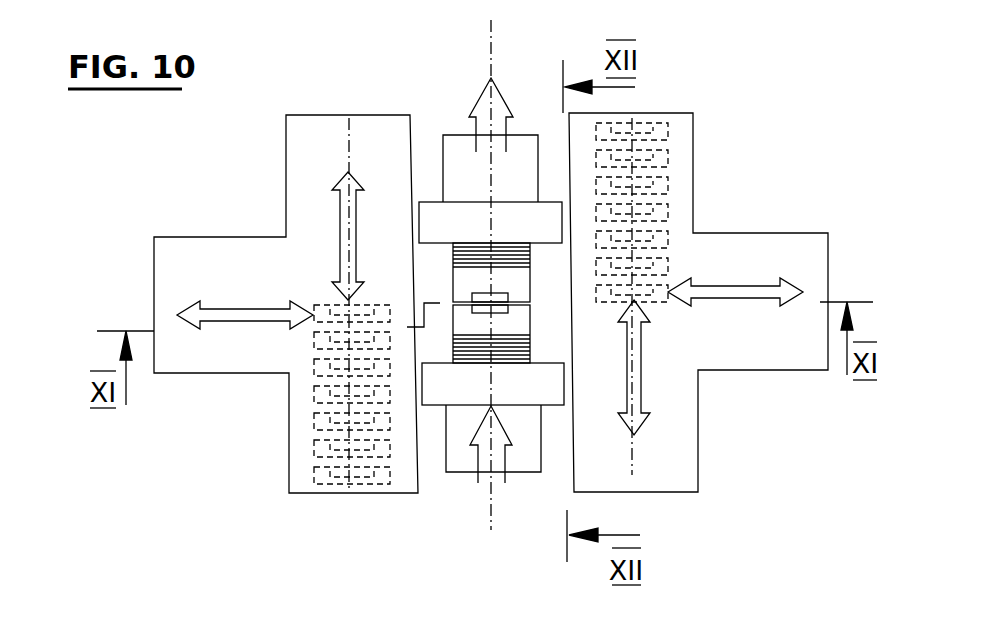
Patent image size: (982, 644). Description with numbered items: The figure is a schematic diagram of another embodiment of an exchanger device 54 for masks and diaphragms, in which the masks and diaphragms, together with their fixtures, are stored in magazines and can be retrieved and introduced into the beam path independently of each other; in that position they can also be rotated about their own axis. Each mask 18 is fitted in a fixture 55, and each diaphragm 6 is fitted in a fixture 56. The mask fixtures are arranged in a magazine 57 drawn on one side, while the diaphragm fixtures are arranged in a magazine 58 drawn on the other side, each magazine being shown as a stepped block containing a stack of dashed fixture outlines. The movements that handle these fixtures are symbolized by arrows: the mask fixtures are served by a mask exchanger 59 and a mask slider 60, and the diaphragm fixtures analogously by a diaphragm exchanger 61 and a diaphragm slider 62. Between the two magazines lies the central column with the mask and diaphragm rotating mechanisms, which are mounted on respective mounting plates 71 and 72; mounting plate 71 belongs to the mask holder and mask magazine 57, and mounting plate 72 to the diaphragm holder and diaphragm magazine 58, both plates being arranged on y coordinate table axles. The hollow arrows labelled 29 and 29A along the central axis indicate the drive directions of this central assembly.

The exchanger device 54 is at (202, 463).
The fixture 55 is at (434, 320).
The fixture 56 is at (458, 290).
The magazine 57 is at (352, 115).
The magazine 58 is at (642, 113).
The mask exchanger 59 is at (230, 314).
The mask slider 60 is at (343, 207).
The diaphragm exchanger 61 is at (745, 291).
The diaphragm slider 62 is at (637, 392).
The diaphragm 6 is at (508, 295).
The mask 18 is at (437, 315).
The lower drive direction 29 is at (500, 453).
The upper drive direction 29A is at (497, 120).
The mounting plate 71 is at (525, 383).
The mounting plate 72 is at (465, 217).